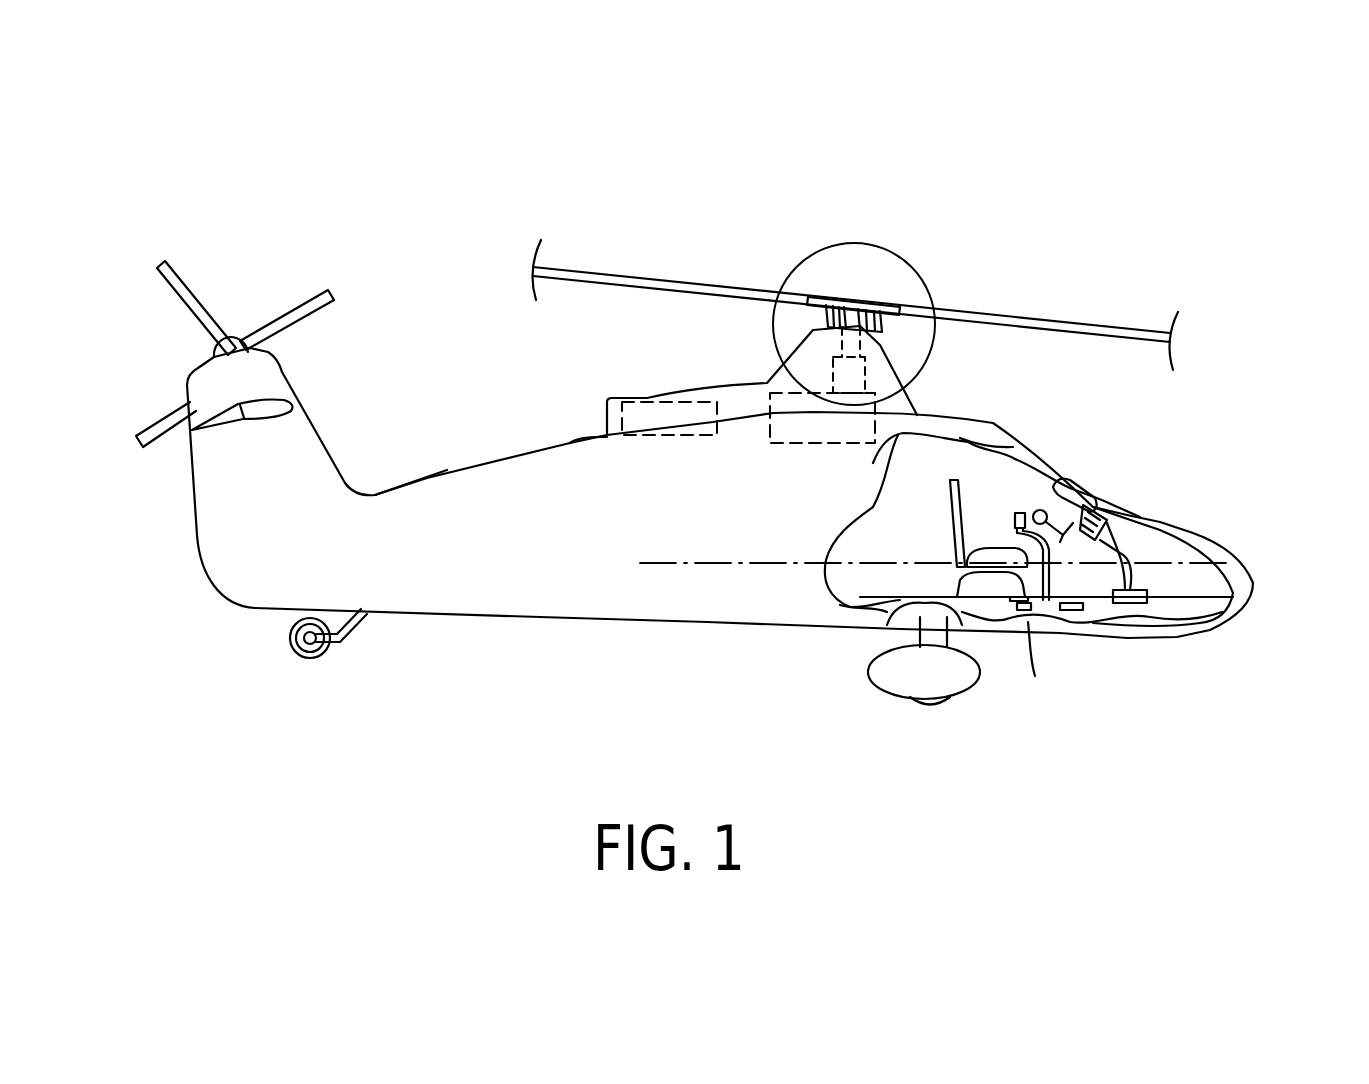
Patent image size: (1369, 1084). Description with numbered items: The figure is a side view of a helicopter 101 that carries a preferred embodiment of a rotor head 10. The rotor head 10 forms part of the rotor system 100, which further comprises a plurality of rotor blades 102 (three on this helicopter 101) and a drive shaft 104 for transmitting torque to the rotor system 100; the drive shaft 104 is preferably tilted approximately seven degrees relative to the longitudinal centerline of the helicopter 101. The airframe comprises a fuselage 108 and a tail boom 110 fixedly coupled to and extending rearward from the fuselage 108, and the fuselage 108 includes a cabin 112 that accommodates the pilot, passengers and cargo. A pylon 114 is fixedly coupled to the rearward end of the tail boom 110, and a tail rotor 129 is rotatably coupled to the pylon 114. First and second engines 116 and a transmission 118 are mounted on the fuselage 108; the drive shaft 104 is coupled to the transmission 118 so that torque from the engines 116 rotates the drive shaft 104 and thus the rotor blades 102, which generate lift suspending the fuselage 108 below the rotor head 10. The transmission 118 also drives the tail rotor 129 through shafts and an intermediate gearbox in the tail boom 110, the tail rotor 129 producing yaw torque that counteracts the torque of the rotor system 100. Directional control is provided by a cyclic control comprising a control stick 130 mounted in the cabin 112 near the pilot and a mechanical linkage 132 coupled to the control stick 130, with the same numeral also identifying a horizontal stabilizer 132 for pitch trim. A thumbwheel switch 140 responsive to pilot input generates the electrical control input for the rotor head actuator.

The rotor head 10 is at (843, 278).
The rotor system 100 is at (855, 287).
The helicopter 101 is at (1070, 220).
The rotor blades 102 is at (643, 275).
The drive shaft 104 is at (905, 348).
The fuselage 108 is at (995, 425).
The tail boom 110 is at (445, 472).
The cabin 112 is at (923, 462).
The pylon 114 is at (217, 489).
The engine 116 is at (653, 417).
The transmission 118 is at (827, 447).
The tail rotor 129 is at (183, 280).
The control stick 130 is at (1015, 513).
The mechanical linkage 132 is at (270, 383).
The thumbwheel switch 140 is at (1070, 484).